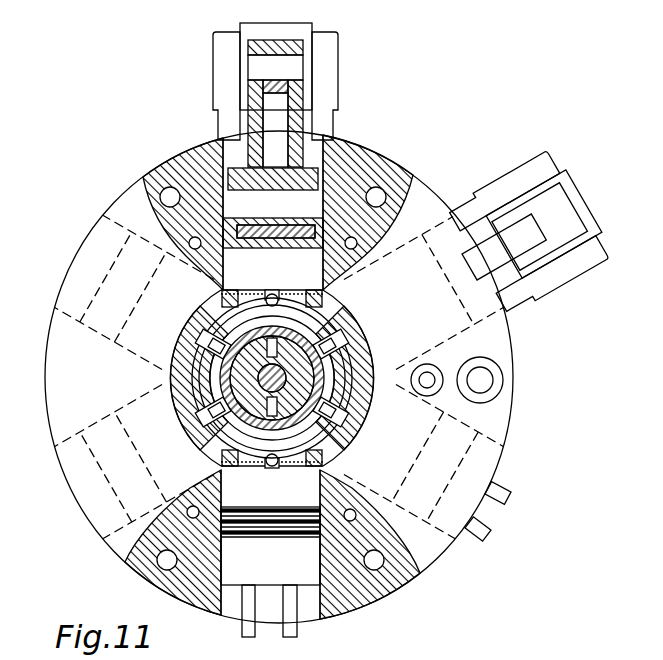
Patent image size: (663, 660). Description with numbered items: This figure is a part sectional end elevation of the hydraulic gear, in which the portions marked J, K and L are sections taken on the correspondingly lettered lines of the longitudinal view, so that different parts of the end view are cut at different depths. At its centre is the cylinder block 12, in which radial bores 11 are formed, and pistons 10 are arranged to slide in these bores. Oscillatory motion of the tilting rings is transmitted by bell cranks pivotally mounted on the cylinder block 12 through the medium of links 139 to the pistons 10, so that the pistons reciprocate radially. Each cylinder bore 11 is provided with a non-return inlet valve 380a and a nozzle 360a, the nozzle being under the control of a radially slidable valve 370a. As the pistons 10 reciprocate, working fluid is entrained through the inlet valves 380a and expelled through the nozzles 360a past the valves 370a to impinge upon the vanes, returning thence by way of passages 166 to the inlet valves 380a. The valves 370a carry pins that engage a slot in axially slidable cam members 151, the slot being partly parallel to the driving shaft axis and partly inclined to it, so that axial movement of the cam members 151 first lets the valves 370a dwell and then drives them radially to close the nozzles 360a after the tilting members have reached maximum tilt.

The piston 10 is at (250, 520).
The radial bore 11 is at (272, 377).
The cylinder block 12 is at (402, 577).
The link 139 is at (332, 146).
The axially slidable cam member 151 is at (356, 365).
The passage 166 is at (213, 320).
The nozzle 360a is at (362, 340).
The radially slidable valve 370a is at (205, 425).
The non-return inlet valve 380a is at (255, 292).
The section J— J is at (269, 380).
The section K— K is at (266, 377).
The section L— L is at (527, 272).